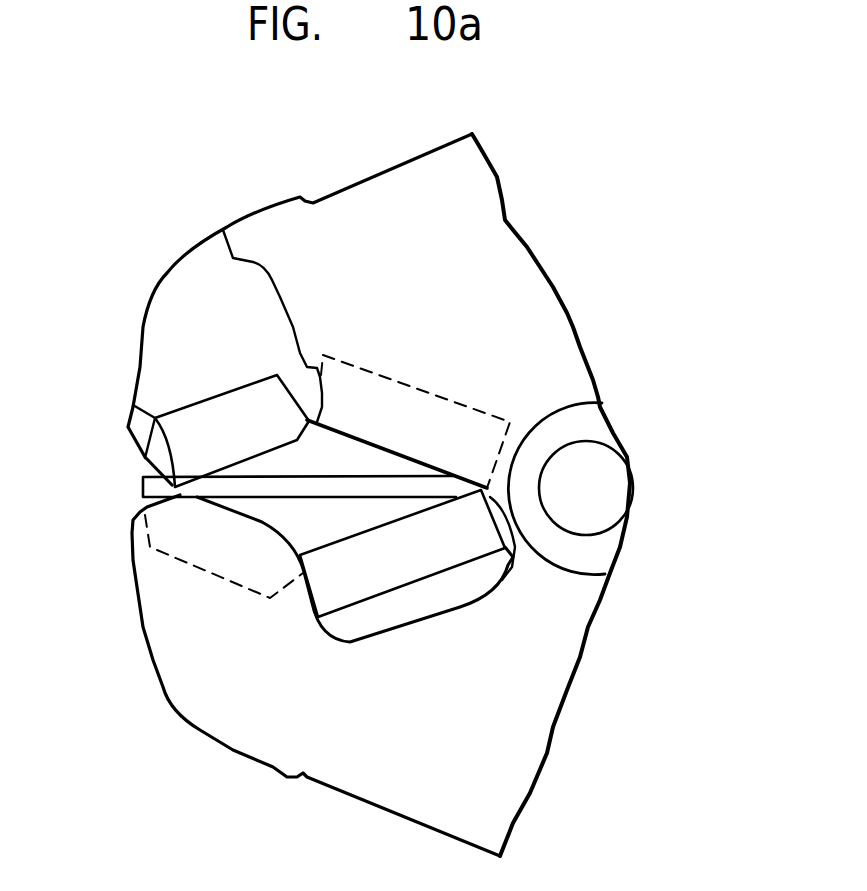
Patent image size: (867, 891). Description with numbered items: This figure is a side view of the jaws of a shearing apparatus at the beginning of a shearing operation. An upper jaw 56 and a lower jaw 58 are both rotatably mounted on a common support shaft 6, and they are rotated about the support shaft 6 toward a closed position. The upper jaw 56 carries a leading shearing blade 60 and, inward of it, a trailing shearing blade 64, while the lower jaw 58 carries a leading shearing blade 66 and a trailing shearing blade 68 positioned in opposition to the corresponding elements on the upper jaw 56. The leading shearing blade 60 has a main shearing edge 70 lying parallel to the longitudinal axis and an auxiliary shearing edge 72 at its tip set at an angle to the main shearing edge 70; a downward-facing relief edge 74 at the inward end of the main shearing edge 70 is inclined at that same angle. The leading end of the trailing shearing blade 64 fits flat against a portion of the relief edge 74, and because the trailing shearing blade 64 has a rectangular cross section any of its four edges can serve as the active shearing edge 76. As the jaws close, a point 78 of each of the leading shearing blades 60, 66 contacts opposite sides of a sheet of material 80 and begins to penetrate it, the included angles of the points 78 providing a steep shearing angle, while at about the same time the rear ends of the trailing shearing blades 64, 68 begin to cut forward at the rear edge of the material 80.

The support shaft 6 is at (613, 473).
The upper jaw 56 is at (188, 285).
The lower jaw 58 is at (280, 757).
The leading shearing blade 60 is at (210, 412).
The trailing shearing blade 64 is at (405, 402).
The leading shearing blade 66 is at (226, 558).
The trailing shearing blade 68 is at (447, 558).
The main shearing edge 70 is at (233, 460).
The auxiliary shearing edge 72 is at (147, 472).
The relief edge 74 is at (306, 429).
The active shearing edge 76 is at (438, 463).
The point 78 is at (130, 410).
The sheet of material 80 is at (343, 502).